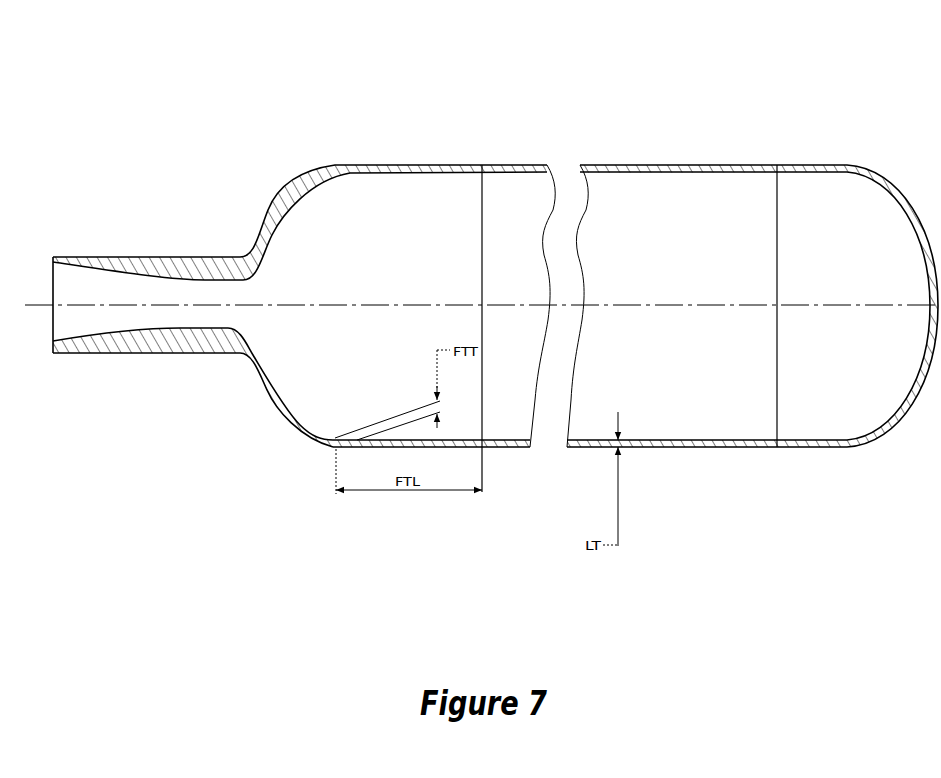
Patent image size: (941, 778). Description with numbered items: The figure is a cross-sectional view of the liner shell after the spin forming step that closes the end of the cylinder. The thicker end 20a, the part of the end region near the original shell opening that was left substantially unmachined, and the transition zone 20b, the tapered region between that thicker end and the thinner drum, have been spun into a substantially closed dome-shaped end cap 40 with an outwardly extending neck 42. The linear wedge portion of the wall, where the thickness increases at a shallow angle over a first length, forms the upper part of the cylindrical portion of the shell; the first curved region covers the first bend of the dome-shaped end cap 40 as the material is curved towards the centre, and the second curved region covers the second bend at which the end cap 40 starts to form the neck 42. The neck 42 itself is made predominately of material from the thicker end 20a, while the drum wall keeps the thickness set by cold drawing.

The thicker end part of the end region 20a is at (148, 307).
The transition zone 20b is at (583, 303).
The dome-shaped end cap 40 is at (295, 436).
The neck 42 is at (202, 353).